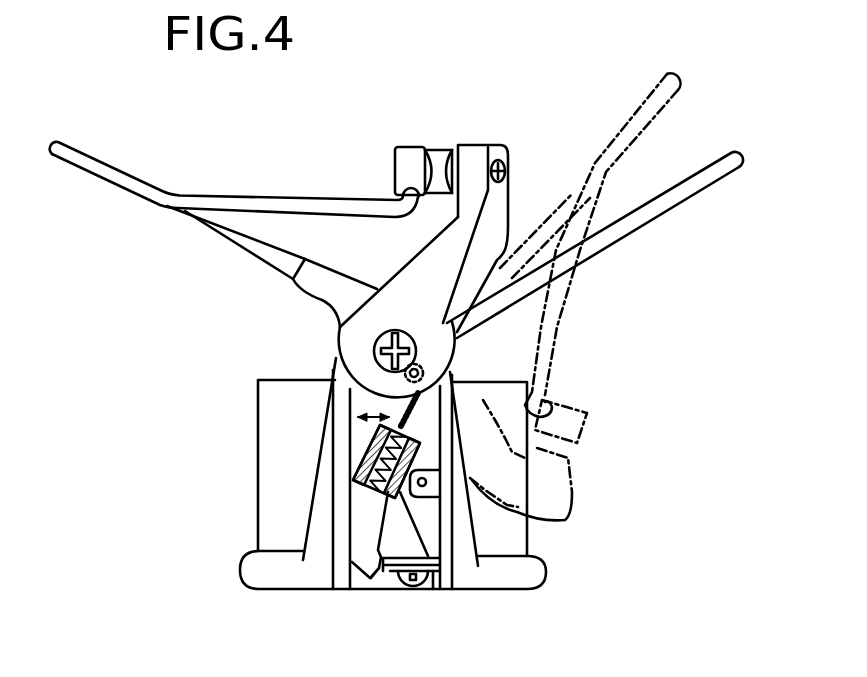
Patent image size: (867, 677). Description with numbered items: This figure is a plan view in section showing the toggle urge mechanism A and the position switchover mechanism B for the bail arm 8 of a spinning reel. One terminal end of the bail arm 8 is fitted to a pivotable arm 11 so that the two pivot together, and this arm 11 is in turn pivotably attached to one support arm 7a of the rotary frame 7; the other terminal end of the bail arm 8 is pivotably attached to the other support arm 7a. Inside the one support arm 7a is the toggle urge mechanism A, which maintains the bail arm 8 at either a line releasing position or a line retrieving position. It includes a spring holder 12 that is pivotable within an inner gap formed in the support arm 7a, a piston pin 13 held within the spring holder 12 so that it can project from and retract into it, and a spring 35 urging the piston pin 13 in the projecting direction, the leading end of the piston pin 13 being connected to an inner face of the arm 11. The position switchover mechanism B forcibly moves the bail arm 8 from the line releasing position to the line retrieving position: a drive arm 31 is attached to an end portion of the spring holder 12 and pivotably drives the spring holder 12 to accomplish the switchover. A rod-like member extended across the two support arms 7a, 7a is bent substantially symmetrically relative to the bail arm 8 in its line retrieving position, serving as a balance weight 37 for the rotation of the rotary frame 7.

The bail arm 8 is at (80, 153).
The pivotable arm 11 is at (473, 153).
The balance weight 37 is at (722, 173).
The rotary frame 7 is at (292, 590).
The support arm 7a is at (337, 392).
The piston pin 13 is at (373, 450).
The spring 35 is at (370, 483).
The spring holder 12 is at (363, 517).
The drive arm 31 is at (430, 593).
The toggle urge mechanism A is at (196, 400).
The position switchover mechanism B is at (363, 593).